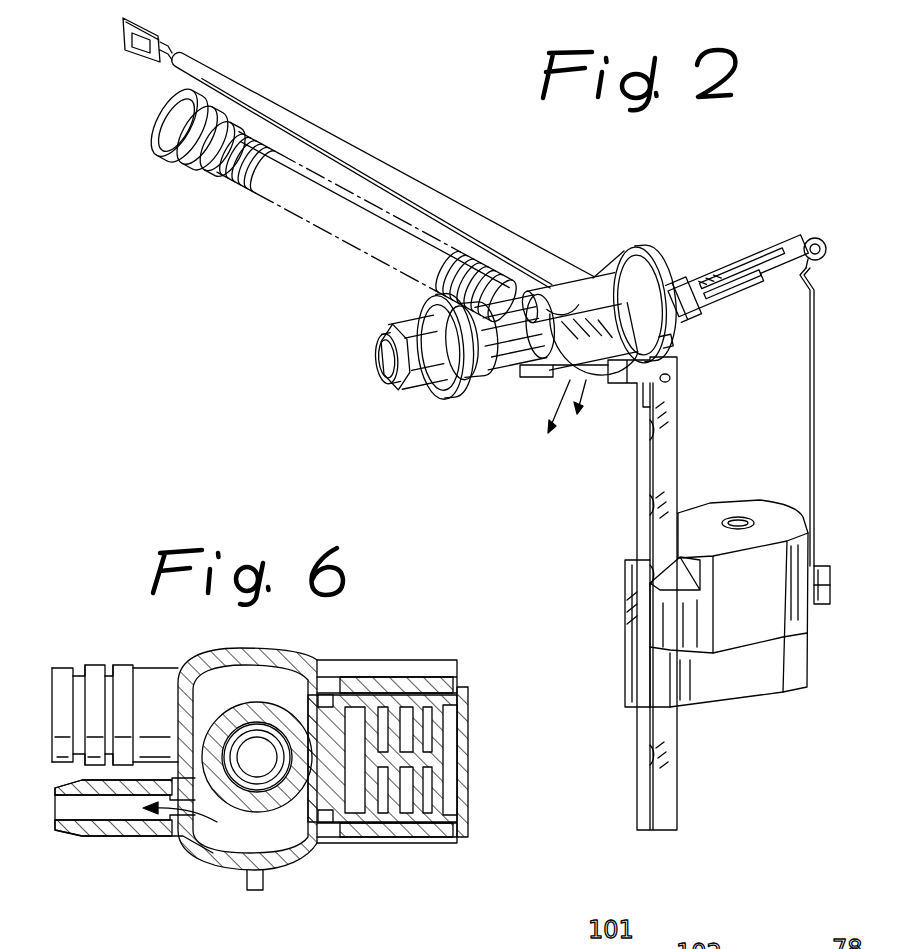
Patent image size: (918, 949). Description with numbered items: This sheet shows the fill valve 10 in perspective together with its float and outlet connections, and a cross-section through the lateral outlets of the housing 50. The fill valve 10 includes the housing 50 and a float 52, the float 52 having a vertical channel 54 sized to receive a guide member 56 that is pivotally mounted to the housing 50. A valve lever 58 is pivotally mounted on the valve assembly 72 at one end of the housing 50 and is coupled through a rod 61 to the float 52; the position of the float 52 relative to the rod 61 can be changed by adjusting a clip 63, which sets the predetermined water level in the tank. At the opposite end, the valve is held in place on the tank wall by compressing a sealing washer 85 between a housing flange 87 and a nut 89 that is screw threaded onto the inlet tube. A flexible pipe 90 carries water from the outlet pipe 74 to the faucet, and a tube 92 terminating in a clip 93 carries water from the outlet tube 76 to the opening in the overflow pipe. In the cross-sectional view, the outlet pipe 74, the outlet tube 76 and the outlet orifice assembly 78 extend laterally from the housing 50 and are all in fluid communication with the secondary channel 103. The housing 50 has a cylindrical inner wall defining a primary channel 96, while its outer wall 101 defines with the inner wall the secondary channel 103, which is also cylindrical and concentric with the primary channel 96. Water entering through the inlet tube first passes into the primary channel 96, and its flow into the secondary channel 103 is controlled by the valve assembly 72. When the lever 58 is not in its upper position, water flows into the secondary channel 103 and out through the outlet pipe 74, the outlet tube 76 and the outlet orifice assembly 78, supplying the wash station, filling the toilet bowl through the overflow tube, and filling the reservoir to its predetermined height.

In FIG. 2, the fill valve 10 is at (592, 251).
In FIG. 2, the housing 50 is at (519, 372).
In FIG. 2, the float 52 is at (748, 677).
In FIG. 2, the vertical channel 54 is at (628, 706).
In FIG. 2, the guide member 56 is at (662, 518).
In FIG. 2, the valve lever 58 is at (733, 268).
In FIG. 2, the rod 61 is at (818, 413).
In FIG. 2, the clip 63 is at (824, 562).
In FIG. 2, the valve assembly 72 is at (662, 247).
In FIG. 6, the outlet pipe 74 is at (67, 668).
In FIG. 6, the outlet tube 76 is at (130, 838).
In FIG. 6, the outlet orifice assembly 78 is at (479, 740).
In FIG. 2, the sealing washer 85 is at (445, 288).
In FIG. 2, the housing flange 87 is at (477, 373).
In FIG. 2, the nut 89 is at (410, 328).
In FIG. 2, the flexible pipe 90 is at (270, 188).
In FIG. 2, the tube 92 is at (343, 152).
In FIG. 2, the clip 93 is at (167, 50).
In FIG. 6, the primary channel 96 is at (252, 765).
In FIG. 6, the outer wall 101 is at (310, 852).
In FIG. 6, the secondary channel 103 is at (288, 683).